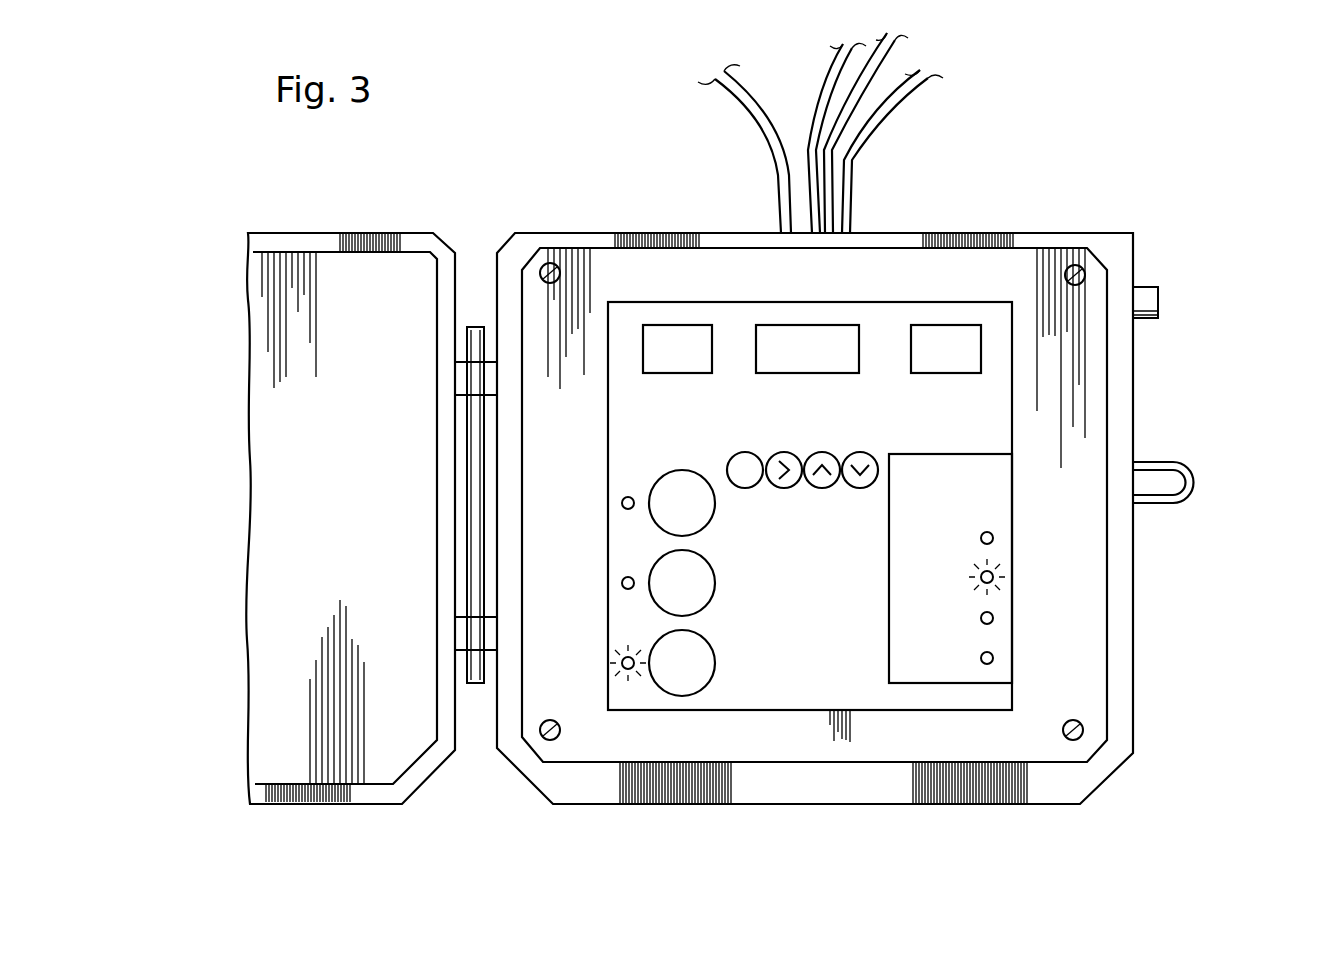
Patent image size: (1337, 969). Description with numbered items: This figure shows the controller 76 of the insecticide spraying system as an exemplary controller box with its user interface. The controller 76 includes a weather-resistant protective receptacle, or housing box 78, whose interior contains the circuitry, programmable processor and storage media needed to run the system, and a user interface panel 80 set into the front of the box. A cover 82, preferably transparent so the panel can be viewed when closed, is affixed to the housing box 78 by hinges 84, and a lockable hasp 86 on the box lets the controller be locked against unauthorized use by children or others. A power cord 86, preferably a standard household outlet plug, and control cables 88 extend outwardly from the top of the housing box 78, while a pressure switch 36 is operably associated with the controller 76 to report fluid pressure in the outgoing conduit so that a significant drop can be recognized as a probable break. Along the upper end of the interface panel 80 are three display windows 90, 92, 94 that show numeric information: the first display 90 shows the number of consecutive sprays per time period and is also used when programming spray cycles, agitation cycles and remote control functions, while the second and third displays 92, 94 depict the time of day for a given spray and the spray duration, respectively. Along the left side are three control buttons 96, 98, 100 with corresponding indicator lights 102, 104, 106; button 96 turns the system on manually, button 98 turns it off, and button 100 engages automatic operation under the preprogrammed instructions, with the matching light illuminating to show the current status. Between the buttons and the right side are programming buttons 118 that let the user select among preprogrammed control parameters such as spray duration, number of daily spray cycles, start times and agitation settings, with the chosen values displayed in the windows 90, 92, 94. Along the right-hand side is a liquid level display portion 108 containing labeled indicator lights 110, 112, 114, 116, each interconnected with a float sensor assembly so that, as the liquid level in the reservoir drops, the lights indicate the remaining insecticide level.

The pressure switch 36 is at (1158, 300).
The controller 76 is at (1162, 239).
The housing box 78 is at (998, 805).
The user interface panel 80 is at (883, 310).
The cover 82 is at (357, 232).
The hinges 84 is at (462, 378).
The lockable hasp / power cord 86 is at (742, 117).
The control cables 88 is at (876, 77).
The first display window 90 is at (658, 345).
The second display window 92 is at (838, 332).
The third display window 94 is at (932, 340).
The manual on control button 96 is at (707, 527).
The off control button 98 is at (713, 597).
The automatic control button 100 is at (715, 663).
The indicator light 102 is at (622, 502).
The indicator light 104 is at (622, 583).
The indicator light 106 is at (622, 663).
The liquid level display portion 108 is at (1003, 467).
The indicator light 110 is at (993, 538).
The indicator light 112 is at (999, 577).
The indicator light 114 is at (993, 618).
The indicator light 116 is at (993, 658).
The programming buttons 118 is at (745, 488).